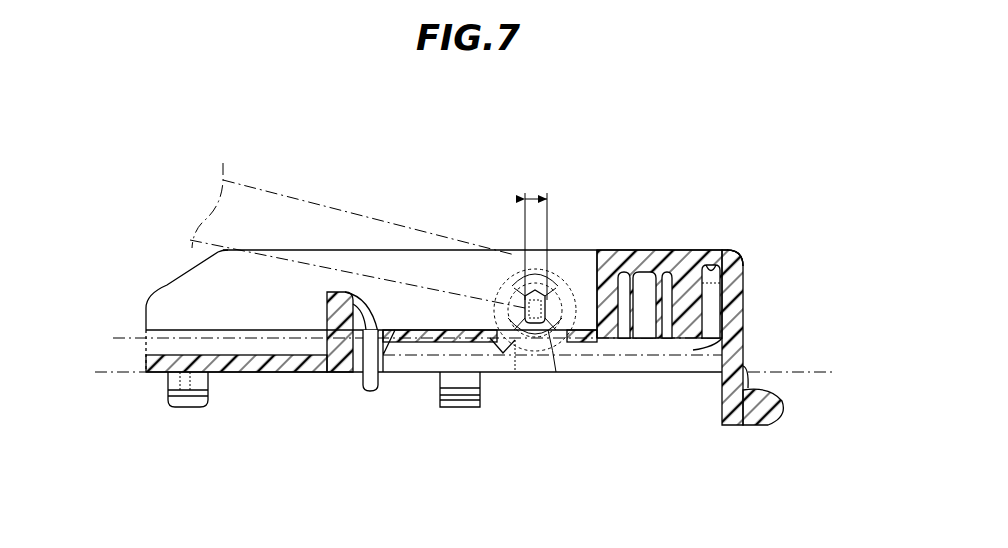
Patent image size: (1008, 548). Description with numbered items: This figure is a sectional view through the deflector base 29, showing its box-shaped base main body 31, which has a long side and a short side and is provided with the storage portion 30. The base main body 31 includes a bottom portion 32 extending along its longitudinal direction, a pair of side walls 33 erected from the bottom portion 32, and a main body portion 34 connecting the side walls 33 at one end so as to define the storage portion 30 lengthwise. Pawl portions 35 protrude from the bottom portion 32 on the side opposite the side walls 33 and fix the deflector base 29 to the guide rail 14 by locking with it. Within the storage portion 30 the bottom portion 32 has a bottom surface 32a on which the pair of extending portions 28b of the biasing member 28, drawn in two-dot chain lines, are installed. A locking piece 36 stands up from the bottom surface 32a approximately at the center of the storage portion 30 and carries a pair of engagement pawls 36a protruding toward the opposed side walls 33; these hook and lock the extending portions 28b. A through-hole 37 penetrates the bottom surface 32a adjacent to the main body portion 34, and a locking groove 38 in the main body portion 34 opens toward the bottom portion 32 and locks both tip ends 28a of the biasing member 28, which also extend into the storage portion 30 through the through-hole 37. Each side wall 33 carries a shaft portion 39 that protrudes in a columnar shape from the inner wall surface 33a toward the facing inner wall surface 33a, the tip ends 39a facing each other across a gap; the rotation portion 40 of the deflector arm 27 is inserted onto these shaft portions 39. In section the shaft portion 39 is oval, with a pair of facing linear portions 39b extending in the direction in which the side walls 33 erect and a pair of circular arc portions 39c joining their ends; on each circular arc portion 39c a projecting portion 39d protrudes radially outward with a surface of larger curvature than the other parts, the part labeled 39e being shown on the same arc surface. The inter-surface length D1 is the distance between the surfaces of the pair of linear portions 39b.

The guide rail 14 is at (760, 372).
The deflector arm 27 is at (288, 197).
The biasing member 28 is at (465, 352).
The tip ends 28a is at (744, 321).
The extending portions 28b is at (107, 375).
The deflector base 29 is at (727, 183).
The storage portion 30 is at (353, 247).
The base main body 31 is at (687, 272).
The bottom portion 32 is at (163, 362).
The bottom surface 32a is at (146, 343).
The side walls 33 is at (167, 290).
The inner wall surfaces 33a is at (312, 302).
The main body portion 34 is at (712, 250).
The pawl portions 35 is at (190, 398).
The locking piece 36 is at (327, 313).
The engagement pawls 36a is at (357, 373).
The through-hole 37 is at (561, 345).
The locking groove 38 is at (728, 253).
The shaft portions 39 is at (556, 295).
The tip ends 39a is at (515, 316).
The linear portions 39b is at (506, 282).
The circular arc portions 39c is at (563, 282).
The projecting portion 39d is at (541, 288).
The pivot surface 39e is at (595, 308).
The rotation portion 40 is at (599, 258).
The inter-surface length D1 is at (532, 197).